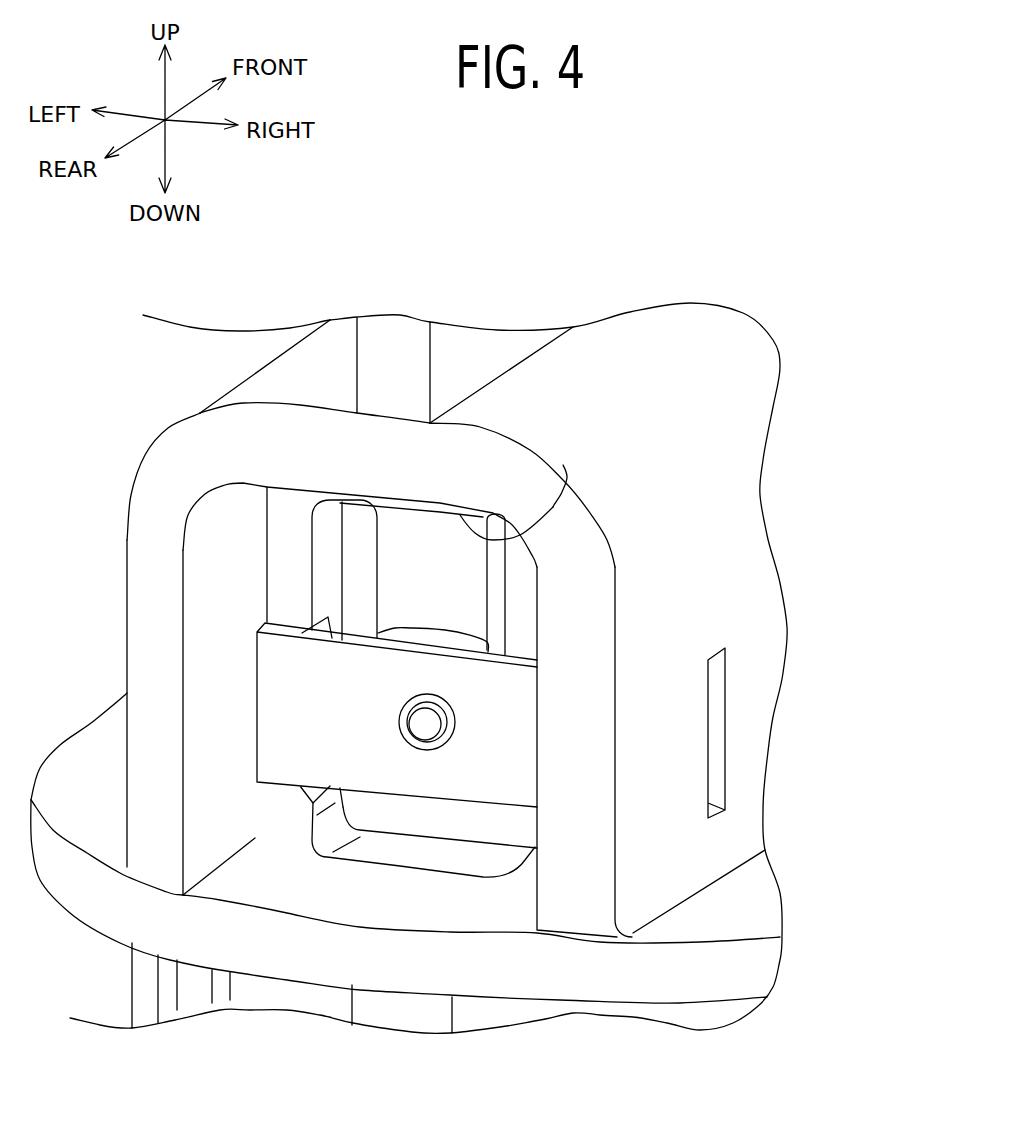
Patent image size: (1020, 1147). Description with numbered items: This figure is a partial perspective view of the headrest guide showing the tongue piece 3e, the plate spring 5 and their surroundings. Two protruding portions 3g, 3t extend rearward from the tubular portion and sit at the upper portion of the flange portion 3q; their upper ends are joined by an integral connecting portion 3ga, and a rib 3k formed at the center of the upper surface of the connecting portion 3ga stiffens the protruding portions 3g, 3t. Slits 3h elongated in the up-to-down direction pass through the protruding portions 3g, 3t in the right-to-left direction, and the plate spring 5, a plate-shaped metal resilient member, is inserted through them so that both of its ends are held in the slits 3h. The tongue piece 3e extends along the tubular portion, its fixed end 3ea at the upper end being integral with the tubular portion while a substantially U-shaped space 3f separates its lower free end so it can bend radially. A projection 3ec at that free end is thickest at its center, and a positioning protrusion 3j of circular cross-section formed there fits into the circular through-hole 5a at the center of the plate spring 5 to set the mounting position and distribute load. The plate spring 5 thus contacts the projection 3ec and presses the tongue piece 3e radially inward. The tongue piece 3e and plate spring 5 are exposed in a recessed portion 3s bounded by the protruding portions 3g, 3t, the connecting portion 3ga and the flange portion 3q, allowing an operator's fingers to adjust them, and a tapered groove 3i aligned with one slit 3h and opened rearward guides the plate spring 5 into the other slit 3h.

The rib 3k is at (398, 338).
The connecting portion 3ga is at (507, 470).
The fixed end 3ea is at (563, 465).
The projection 3ec is at (410, 637).
The recessed portion 3s is at (282, 523).
The tongue piece 3e is at (468, 613).
The space 3f is at (360, 553).
The tapered groove 3i is at (318, 633).
The protruding portion 3g is at (577, 642).
The protruding portion 3t is at (143, 640).
The slit 3h is at (722, 730).
The plate spring 5 is at (278, 738).
The through-hole 5a is at (393, 727).
The positioning protrusion 3j is at (428, 732).
The flange portion 3q is at (663, 972).